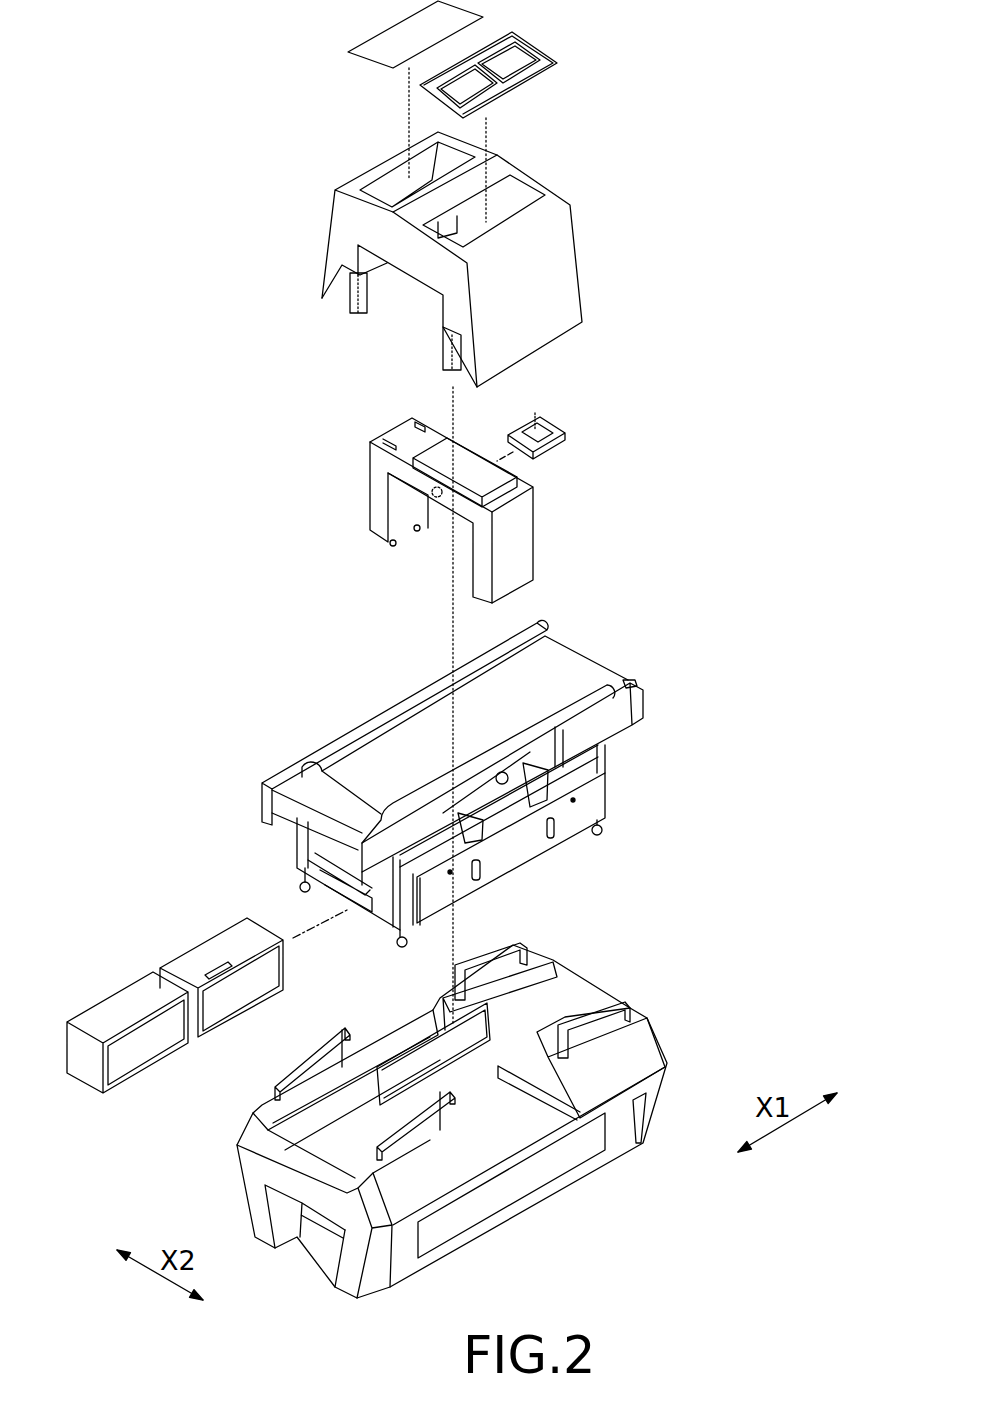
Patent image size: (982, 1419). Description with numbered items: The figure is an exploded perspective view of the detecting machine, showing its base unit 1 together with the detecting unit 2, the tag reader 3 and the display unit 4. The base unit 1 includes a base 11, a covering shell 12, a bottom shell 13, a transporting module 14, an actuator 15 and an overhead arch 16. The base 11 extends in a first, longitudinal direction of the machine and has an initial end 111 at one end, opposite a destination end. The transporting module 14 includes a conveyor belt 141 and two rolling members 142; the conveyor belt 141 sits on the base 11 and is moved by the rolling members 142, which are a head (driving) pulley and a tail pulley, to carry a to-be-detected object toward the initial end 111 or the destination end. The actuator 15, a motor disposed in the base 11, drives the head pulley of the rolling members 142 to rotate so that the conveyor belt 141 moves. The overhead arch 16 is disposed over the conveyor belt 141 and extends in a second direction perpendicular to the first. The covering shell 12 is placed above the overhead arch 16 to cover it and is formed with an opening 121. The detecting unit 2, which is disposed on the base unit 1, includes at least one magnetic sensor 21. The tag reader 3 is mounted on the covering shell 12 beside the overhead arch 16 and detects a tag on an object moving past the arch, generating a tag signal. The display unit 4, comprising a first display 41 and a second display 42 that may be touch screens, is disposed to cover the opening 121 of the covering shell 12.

The base unit 1 is at (486, 1102).
The base 11 is at (436, 837).
The initial end 111 is at (307, 872).
The covering shell 12 is at (498, 259).
The opening 121 is at (533, 183).
The bottom shell 13 is at (662, 1037).
The transporting module 14 is at (425, 746).
The conveyor belt 141 is at (357, 758).
The rolling members 142 is at (278, 792).
The actuator 15 is at (110, 1052).
The overhead arch 16 is at (418, 510).
The detecting unit 2 is at (397, 538).
The magnetic sensor 21 is at (437, 500).
The tag reader 3 is at (585, 405).
The display unit 4 is at (518, 67).
The first display 41 is at (482, 97).
The second display 42 is at (525, 75).